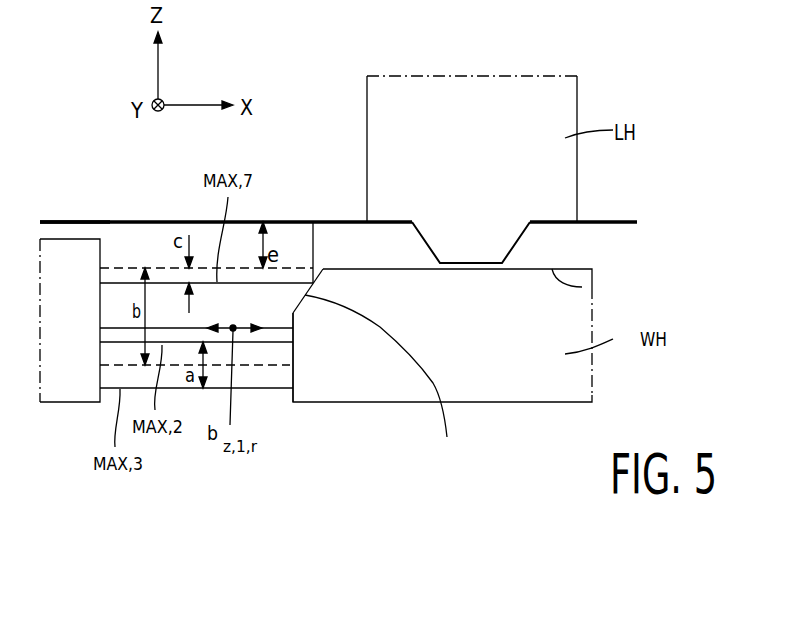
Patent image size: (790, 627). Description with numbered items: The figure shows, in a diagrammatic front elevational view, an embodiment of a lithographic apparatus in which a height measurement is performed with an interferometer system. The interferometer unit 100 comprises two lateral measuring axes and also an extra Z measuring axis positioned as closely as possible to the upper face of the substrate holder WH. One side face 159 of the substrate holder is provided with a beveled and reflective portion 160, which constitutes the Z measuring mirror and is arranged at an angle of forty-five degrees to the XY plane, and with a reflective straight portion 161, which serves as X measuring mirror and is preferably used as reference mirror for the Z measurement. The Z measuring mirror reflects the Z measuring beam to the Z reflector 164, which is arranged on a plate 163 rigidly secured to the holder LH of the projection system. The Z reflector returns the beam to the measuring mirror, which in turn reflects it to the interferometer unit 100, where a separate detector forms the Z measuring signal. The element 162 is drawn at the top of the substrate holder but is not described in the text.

The interferometer unit 100 is at (62, 400).
The side face 159 is at (312, 316).
The beveled and reflective portion 160 is at (395, 380).
The reflective straight portion 161 is at (293, 373).
The workpiece top face transition 162 is at (582, 287).
The plate 163 is at (141, 218).
The Z reflector 164 is at (72, 224).